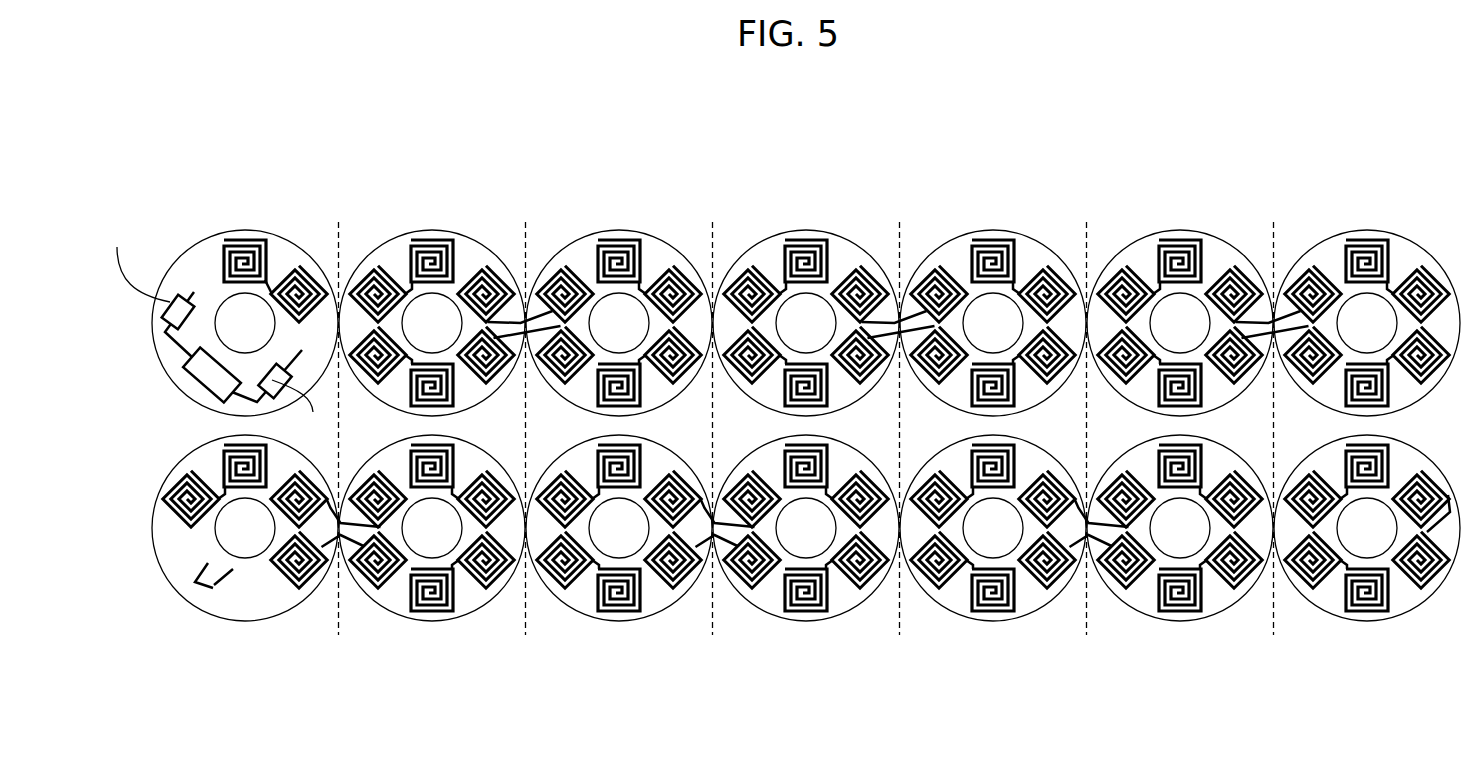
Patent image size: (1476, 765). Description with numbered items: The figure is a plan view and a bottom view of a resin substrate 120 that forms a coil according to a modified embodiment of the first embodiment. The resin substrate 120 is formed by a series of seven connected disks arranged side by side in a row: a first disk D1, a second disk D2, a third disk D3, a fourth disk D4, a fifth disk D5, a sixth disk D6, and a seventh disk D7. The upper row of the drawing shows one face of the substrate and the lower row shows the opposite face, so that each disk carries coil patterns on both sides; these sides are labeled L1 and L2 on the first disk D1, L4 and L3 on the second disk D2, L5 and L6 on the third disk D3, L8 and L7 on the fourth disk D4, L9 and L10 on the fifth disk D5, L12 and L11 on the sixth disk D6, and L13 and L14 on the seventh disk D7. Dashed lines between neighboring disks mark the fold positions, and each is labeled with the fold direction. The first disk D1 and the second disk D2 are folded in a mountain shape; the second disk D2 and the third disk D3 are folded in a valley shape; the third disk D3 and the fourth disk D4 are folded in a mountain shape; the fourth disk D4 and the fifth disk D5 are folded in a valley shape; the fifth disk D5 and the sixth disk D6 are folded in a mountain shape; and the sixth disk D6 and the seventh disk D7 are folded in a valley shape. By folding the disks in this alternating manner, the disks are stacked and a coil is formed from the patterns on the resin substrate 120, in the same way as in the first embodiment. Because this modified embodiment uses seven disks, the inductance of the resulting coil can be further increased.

The resin substrate 120 is at (755, 196).
The first disk D1 is at (278, 248).
The second disk D2 is at (470, 247).
The third disk D3 is at (636, 243).
The fourth disk D4 is at (830, 245).
The fifth disk D5 is at (1024, 245).
The sixth disk D6 is at (1210, 245).
The seventh disk D7 is at (1420, 247).
The coil layer L1 is at (245, 323).
The coil layer L2 is at (245, 528).
The coil layer L3 is at (432, 528).
The coil layer L4 is at (432, 323).
The coil layer L5 is at (619, 323).
The coil layer L6 is at (619, 528).
The coil layer L7 is at (806, 528).
The coil layer L8 is at (806, 323).
The coil layer L9 is at (993, 323).
The coil layer L10 is at (993, 528).
The coil layer L11 is at (1180, 528).
The coil layer L12 is at (1180, 323).
The coil layer L13 is at (1367, 323).
The coil layer L14 is at (1367, 528).